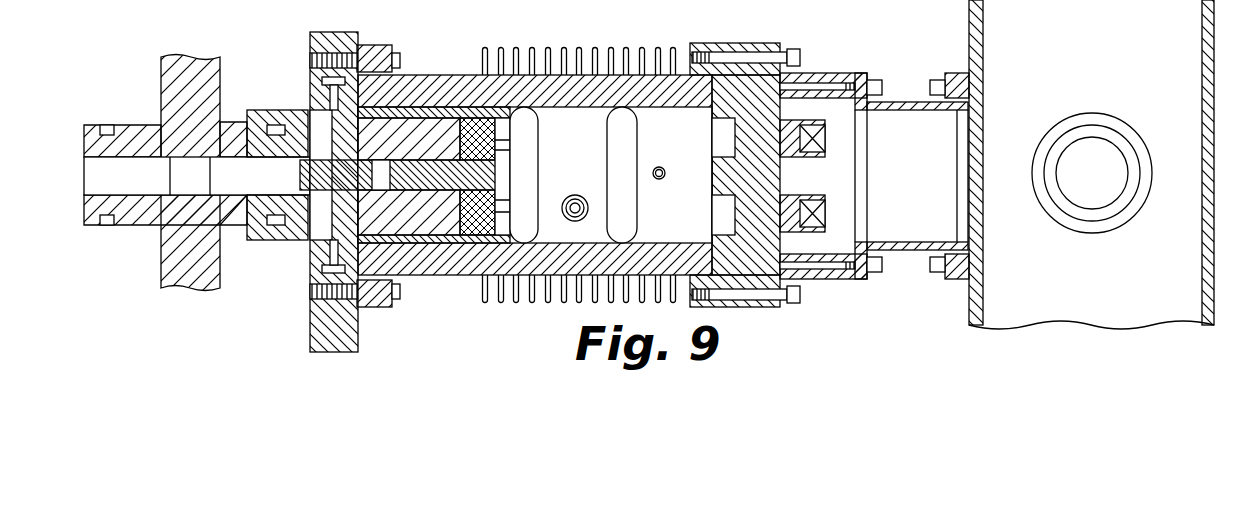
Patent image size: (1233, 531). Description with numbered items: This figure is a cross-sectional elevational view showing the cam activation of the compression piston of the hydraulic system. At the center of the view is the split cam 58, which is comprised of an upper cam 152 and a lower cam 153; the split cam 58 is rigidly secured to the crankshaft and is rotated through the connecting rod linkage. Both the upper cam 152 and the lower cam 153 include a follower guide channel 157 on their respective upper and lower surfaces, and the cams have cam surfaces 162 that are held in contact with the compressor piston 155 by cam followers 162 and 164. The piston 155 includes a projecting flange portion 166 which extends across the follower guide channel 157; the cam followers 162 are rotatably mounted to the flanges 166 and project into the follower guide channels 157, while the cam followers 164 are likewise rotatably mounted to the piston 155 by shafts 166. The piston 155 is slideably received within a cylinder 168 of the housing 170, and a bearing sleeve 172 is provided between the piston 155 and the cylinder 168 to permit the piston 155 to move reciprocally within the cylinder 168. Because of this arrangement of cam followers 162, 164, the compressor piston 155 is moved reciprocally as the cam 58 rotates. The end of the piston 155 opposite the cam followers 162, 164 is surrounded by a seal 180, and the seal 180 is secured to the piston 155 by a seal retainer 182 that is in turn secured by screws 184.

The split cam 58 is at (150, 190).
The upper cam 152 is at (123, 125).
The lower cam 153 is at (120, 226).
The compressor piston 155 is at (454, 128).
The follower guide channel 157 is at (270, 126).
The cam follower 162 is at (287, 125).
The cam follower 164 is at (372, 135).
The projecting flange portion 166 is at (247, 120).
The cylinder 168 is at (553, 70).
The housing 170 is at (505, 110).
The bearing sleeve 172 is at (403, 77).
The seal 180 is at (500, 165).
The seal retainer 182 is at (505, 127).
The screw 184 is at (505, 145).